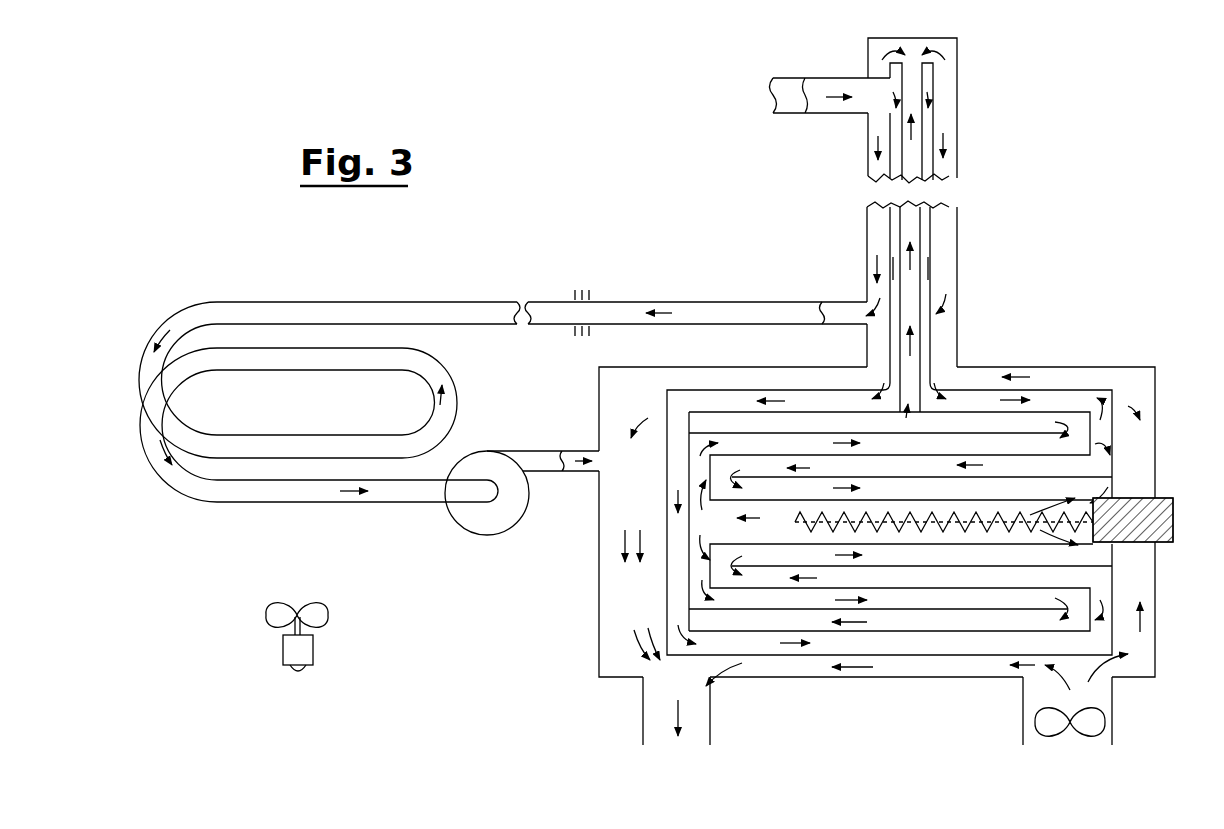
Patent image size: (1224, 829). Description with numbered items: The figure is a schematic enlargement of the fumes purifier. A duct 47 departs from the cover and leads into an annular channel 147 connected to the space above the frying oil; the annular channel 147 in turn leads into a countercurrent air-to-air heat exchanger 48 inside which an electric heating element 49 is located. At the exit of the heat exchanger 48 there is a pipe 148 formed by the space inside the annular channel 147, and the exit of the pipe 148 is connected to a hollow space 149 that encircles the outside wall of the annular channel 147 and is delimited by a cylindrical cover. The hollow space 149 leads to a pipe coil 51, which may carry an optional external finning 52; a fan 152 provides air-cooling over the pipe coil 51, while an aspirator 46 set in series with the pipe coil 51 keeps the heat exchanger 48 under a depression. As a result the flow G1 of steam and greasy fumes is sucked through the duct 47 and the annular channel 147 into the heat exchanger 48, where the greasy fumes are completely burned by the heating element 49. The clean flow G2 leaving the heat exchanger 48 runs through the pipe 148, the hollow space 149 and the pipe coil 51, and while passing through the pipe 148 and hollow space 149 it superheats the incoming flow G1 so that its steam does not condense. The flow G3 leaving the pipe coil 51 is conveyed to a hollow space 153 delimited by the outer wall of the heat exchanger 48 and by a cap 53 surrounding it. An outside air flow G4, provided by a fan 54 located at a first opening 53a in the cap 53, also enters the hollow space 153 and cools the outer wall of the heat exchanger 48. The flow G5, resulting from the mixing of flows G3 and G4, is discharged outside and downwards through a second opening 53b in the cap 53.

The duct 47 is at (832, 114).
The annular channel 147 is at (928, 128).
The pipe 148 is at (908, 225).
The hollow space 149 is at (942, 270).
The external finning 52 is at (600, 290).
The pipe coil 51 is at (468, 386).
The aspirator 46 is at (487, 535).
The heat exchanger 48 is at (1120, 430).
The electric heating element 49 is at (1110, 540).
The cap 53 is at (598, 613).
The hollow space 153 is at (627, 620).
The second opening 53b is at (665, 680).
The first opening 53a is at (1103, 675).
The fan 54 is at (1093, 721).
The fan 152 is at (272, 617).
The air flow G1 is at (836, 88).
The flow G2 is at (912, 352).
The flow G3 is at (577, 463).
The flow G4 is at (1137, 655).
The flow G5 is at (678, 718).